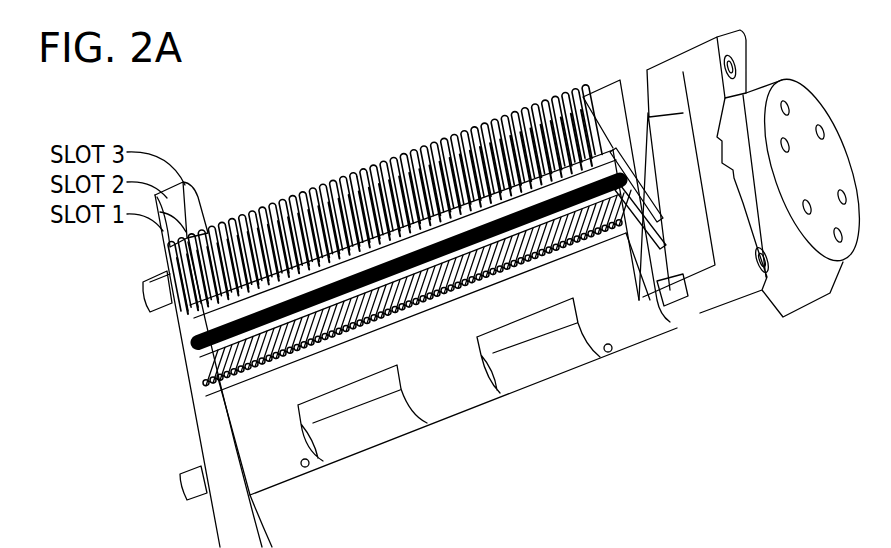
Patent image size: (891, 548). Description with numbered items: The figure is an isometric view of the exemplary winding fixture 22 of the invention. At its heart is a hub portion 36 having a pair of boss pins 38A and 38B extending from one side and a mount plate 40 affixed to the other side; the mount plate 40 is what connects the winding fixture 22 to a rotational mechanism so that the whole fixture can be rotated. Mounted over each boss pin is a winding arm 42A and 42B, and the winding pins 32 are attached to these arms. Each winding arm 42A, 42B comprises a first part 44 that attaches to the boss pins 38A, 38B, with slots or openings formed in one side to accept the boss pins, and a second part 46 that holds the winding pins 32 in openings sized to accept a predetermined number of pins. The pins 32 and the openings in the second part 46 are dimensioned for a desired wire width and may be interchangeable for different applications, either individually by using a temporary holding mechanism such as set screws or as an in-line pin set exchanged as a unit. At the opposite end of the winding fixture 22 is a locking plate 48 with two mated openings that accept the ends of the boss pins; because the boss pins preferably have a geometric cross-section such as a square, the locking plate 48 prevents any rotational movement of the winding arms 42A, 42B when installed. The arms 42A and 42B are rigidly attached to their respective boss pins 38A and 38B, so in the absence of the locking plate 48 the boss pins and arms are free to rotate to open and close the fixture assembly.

The winding fixture 22 is at (496, 71).
The winding pins 32 is at (320, 190).
The hub portion 36 is at (750, 288).
The boss pin 38A is at (677, 303).
The boss pin 38B is at (640, 97).
The mount plate 40 is at (822, 263).
The winding arm 42A is at (627, 322).
The winding arm 42B is at (603, 97).
The first part 44 is at (633, 133).
The second part 46 is at (645, 183).
The locking plate 48 is at (252, 525).